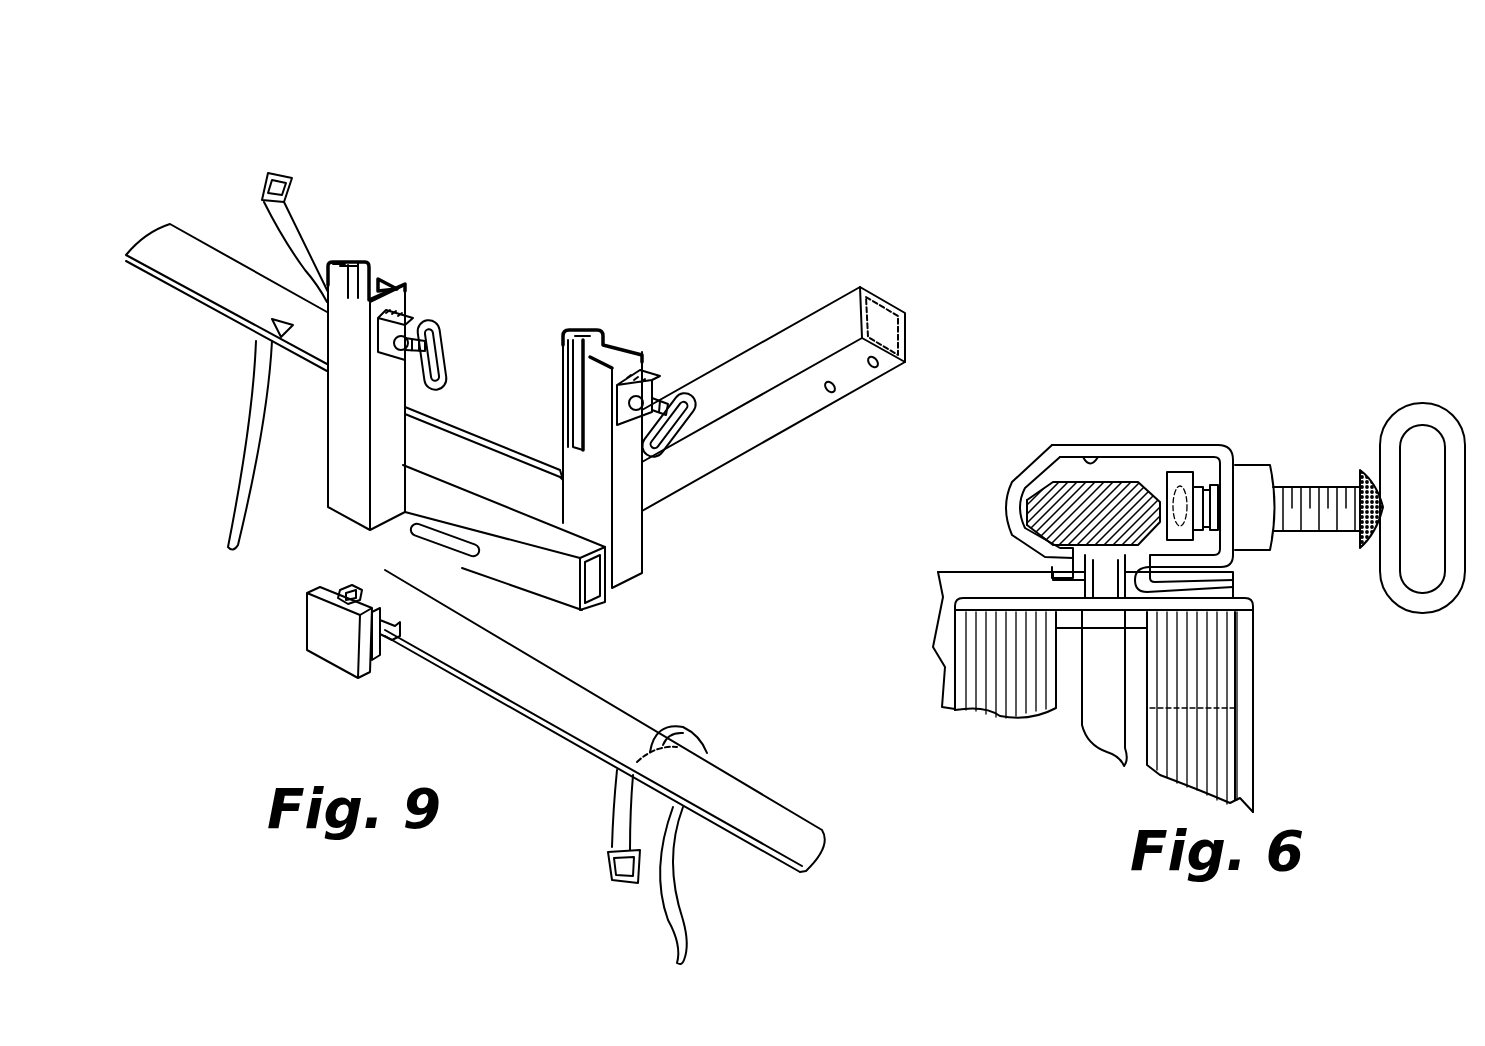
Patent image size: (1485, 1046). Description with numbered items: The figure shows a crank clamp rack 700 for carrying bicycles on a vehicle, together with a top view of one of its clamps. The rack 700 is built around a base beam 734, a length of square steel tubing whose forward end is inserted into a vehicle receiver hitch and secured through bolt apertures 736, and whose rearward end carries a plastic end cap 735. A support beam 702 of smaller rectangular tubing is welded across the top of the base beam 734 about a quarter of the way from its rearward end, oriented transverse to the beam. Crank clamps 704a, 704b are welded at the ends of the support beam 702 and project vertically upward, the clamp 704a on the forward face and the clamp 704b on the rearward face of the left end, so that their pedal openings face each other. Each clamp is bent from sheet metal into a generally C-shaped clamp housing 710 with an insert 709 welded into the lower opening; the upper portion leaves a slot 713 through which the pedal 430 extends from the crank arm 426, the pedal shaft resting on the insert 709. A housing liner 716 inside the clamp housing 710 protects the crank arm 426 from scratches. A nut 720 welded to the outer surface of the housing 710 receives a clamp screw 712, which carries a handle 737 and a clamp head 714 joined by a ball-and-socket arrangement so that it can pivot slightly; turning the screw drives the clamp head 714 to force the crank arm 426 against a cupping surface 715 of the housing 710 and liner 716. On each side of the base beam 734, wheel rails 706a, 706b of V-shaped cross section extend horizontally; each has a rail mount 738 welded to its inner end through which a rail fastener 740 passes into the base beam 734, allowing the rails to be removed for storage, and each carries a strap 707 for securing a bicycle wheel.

In FIG. 9, the rack 700 is at (232, 743).
In FIG. 9, the support beam 702 is at (556, 580).
In FIG. 10, the support beam 702 is at (940, 582).
In FIG. 9, the crank clamp 704a is at (622, 320).
In FIG. 9, the crank clamp 704b is at (410, 280).
In FIG. 9, the wheel rail 706a is at (187, 244).
In FIG. 9, the wheel rail 706b is at (757, 803).
In FIG. 9, the strap 707 is at (292, 230).
In FIG. 9, the insert 709 is at (578, 478).
In FIG. 9, the clamp housing 710 is at (347, 490).
In FIG. 10, the clamp housing 710 is at (1008, 505).
In FIG. 9, the clamp screw 712 is at (345, 448).
In FIG. 10, the clamp screw 712 is at (1335, 512).
In FIG. 9, the slot 713 is at (372, 272).
In FIG. 10, the slot 713 is at (1160, 585).
In FIG. 10, the clamp head 714 is at (1182, 472).
In FIG. 9, the cupping surface 715 is at (344, 266).
In FIG. 10, the cupping surface 715 is at (1024, 506).
In FIG. 9, the housing liner 716 is at (348, 262).
In FIG. 10, the housing liner 716 is at (1088, 458).
In FIG. 9, the nut 720 is at (408, 323).
In FIG. 10, the nut 720 is at (1250, 470).
In FIG. 9, the base beam 734 is at (782, 412).
In FIG. 9, the end cap 735 is at (338, 650).
In FIG. 9, the bolt apertures 736 is at (878, 367).
In FIG. 9, the handle 737 is at (446, 355).
In FIG. 10, the handle 737 is at (1430, 413).
In FIG. 9, the rail mount 738 is at (378, 660).
In FIG. 9, the fastener 740 is at (354, 595).
In FIG. 10, the crank arm 426 is at (1117, 492).
In FIG. 10, the pedal 430 is at (1245, 758).